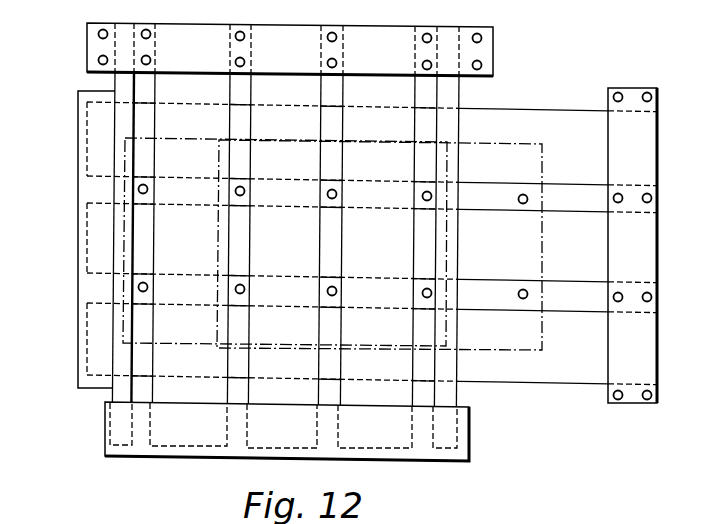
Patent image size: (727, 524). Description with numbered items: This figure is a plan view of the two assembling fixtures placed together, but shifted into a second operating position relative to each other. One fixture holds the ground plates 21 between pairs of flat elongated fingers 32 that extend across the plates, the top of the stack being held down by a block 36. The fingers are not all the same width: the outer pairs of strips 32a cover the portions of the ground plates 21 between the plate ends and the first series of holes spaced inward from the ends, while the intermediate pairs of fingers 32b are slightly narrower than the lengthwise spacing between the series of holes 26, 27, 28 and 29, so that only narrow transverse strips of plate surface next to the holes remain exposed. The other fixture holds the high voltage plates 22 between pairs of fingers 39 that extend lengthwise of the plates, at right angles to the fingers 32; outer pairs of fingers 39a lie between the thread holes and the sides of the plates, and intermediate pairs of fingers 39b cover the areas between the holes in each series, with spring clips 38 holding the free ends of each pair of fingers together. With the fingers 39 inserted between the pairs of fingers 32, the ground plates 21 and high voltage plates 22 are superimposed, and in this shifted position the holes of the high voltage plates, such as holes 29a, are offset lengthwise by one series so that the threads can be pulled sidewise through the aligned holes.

The ground plate 21 is at (196, 139).
The high voltage plate 22 is at (545, 158).
The series of holes 26 is at (148, 190).
The series of holes 27 is at (245, 191).
The series of holes 28 is at (337, 194).
The series of holes 29 is at (426, 201).
The series of holes 29a is at (522, 204).
The finger 32 is at (462, 93).
The outer pair of strips 32a is at (122, 428).
The intermediate pair of fingers 32b is at (213, 437).
The block 36 is at (87, 39).
The spring clip 38 is at (78, 92).
The finger 39 is at (591, 104).
The outer pair of fingers 39a is at (92, 136).
The intermediate pair of fingers 39b is at (92, 231).